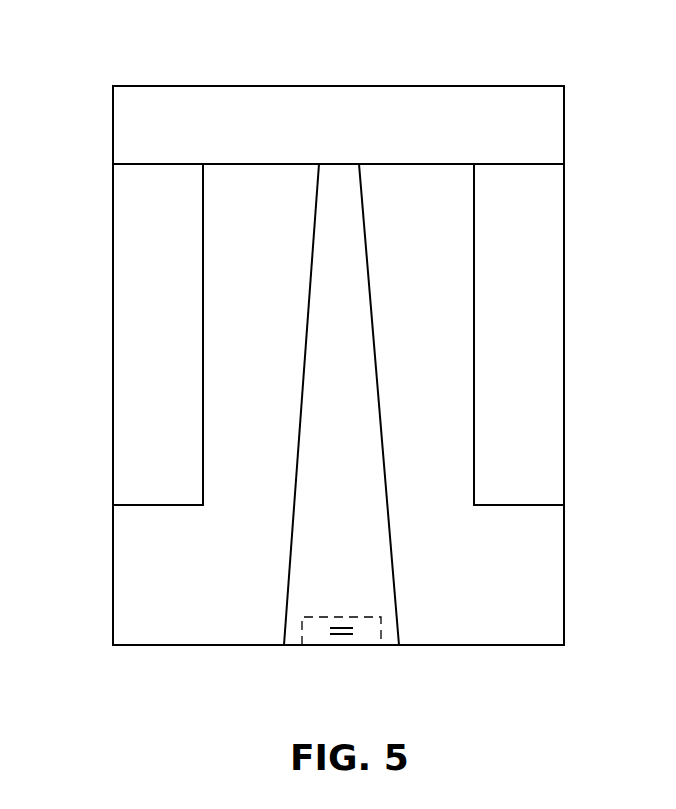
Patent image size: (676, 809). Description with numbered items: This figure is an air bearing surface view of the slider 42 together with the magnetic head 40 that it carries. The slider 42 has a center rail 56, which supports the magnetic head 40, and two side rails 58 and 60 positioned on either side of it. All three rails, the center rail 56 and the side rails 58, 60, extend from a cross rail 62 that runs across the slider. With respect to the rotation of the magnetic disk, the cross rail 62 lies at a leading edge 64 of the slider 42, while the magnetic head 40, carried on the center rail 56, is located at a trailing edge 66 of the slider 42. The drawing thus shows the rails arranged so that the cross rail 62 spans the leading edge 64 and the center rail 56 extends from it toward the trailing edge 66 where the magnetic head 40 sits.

The slider 42 is at (113, 593).
The cross rail 62 is at (256, 100).
The leading edge 64 is at (440, 86).
The side rail 58 is at (130, 245).
The side rail 60 is at (547, 248).
The center rail 56 is at (325, 280).
The magnetic head 40 is at (320, 647).
The trailing edge 66 is at (465, 647).